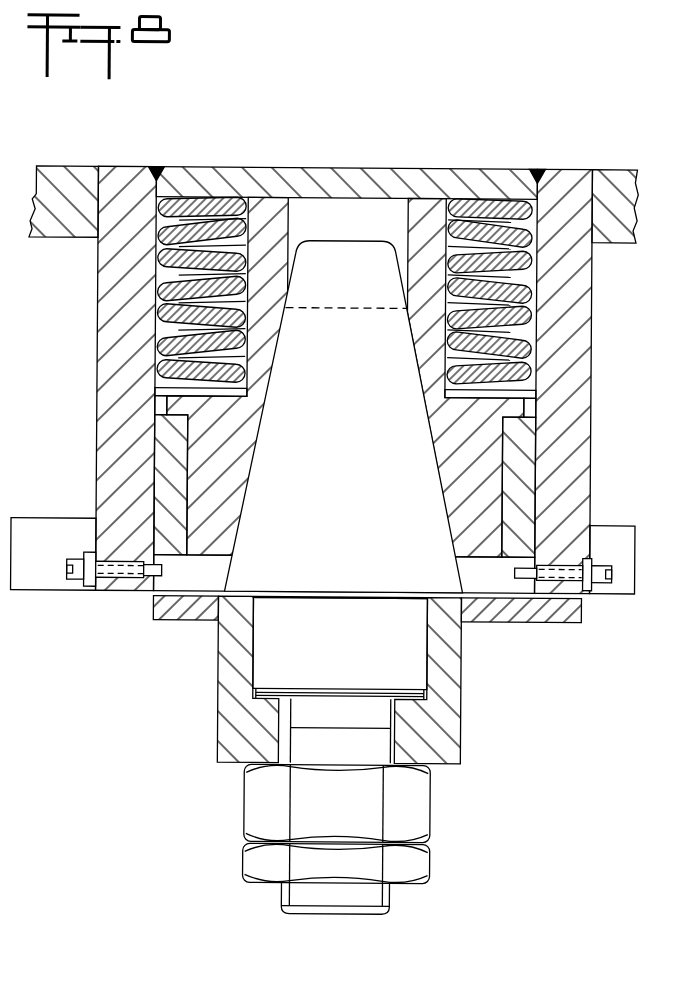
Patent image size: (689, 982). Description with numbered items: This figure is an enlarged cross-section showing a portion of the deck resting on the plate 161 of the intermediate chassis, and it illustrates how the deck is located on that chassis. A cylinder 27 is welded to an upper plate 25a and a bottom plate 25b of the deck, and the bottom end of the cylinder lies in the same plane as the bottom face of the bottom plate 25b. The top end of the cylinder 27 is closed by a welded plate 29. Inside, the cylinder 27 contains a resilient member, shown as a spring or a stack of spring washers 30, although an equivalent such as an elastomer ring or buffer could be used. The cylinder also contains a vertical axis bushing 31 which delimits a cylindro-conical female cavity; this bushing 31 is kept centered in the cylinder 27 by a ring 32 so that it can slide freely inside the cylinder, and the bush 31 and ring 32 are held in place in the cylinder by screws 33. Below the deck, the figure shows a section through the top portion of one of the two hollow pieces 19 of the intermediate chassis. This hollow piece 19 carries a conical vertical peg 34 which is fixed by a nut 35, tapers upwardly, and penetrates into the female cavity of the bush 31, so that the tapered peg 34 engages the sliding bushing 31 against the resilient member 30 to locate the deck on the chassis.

The plate 25a is at (65, 183).
The bottom plate 25b is at (43, 580).
The cylinder 27 is at (100, 449).
The welded plate 29 is at (312, 180).
The spring or stack of spring washers 30 is at (178, 313).
The vertical axis bushing 31 is at (470, 450).
The ring 32 is at (512, 505).
The screws 33 is at (602, 585).
The conical vertical peg 34 is at (380, 478).
The plate of the intermediate chassis 161 is at (532, 613).
The hollow piece 19 is at (430, 737).
The nut 35 is at (407, 820).